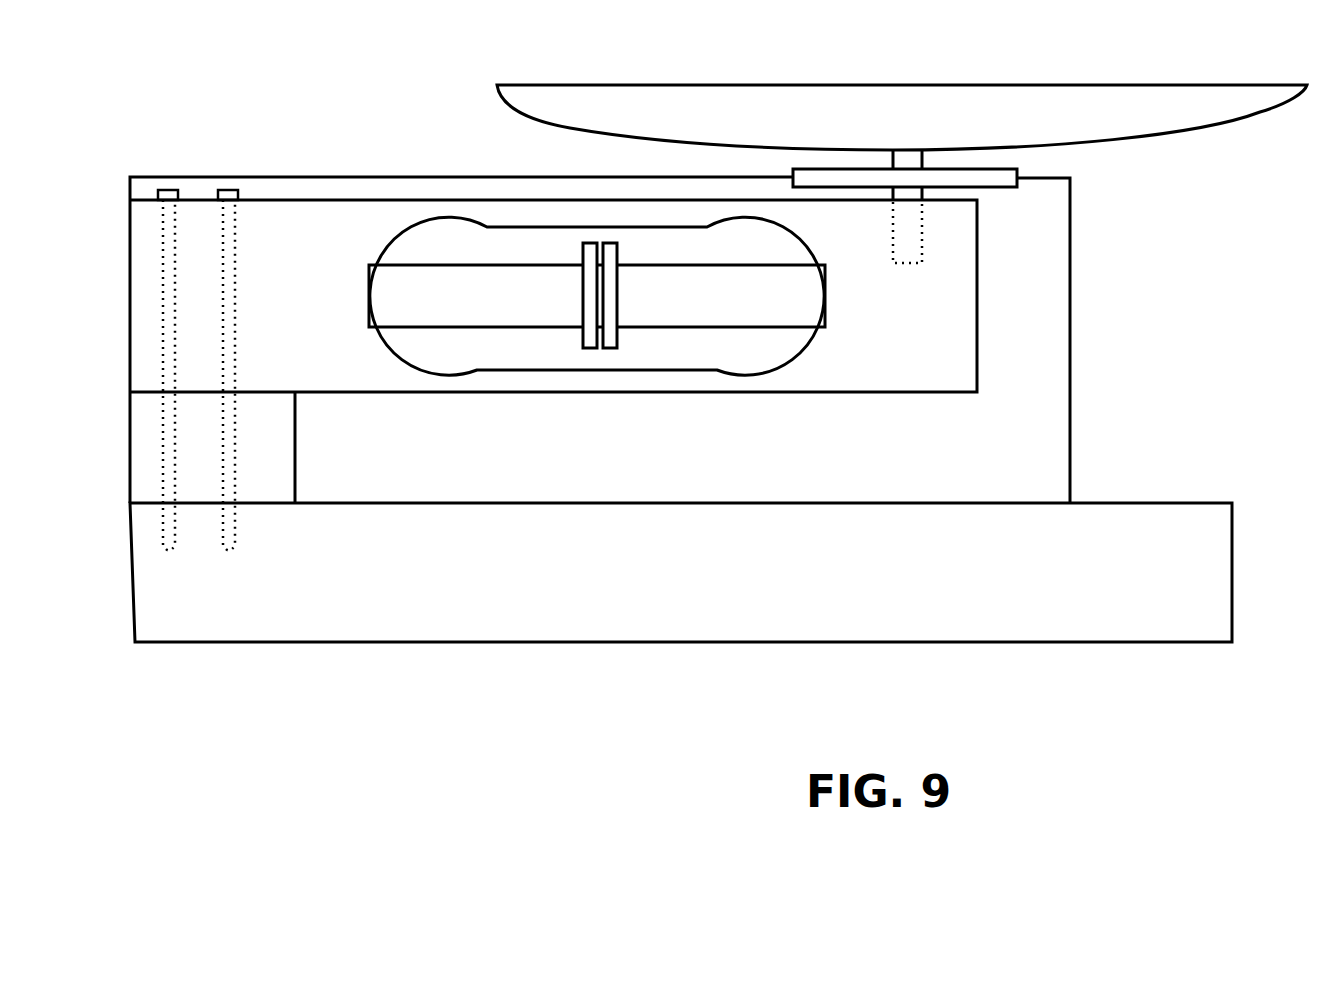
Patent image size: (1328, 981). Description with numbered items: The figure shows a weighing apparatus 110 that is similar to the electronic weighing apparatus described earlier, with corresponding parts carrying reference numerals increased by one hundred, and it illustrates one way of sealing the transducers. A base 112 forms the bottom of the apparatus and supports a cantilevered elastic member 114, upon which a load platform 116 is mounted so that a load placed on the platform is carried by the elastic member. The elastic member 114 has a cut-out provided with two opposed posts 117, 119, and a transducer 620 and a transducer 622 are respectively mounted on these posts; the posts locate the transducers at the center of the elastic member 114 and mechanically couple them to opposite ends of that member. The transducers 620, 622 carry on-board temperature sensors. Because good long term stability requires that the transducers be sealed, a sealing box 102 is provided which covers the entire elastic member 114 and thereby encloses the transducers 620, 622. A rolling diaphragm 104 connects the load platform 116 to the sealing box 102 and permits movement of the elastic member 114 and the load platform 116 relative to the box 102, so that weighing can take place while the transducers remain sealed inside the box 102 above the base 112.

The weighing apparatus 110 is at (718, 441).
The sealing box 102 is at (715, 364).
The rolling diaphragm 104 is at (993, 188).
The base 112 is at (681, 572).
The elastic member 114 is at (318, 341).
The load platform 116 is at (1157, 115).
The post 117 is at (597, 296).
The post 119 is at (741, 300).
The transducer 620 is at (577, 346).
The transducer 622 is at (621, 346).